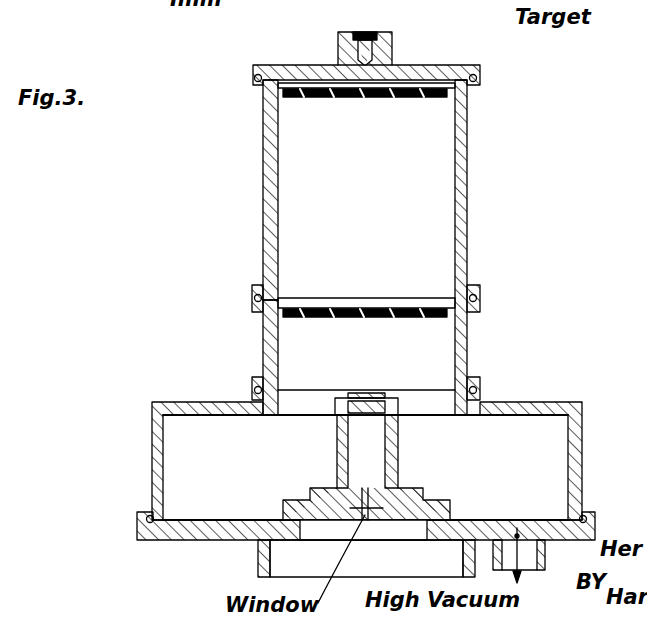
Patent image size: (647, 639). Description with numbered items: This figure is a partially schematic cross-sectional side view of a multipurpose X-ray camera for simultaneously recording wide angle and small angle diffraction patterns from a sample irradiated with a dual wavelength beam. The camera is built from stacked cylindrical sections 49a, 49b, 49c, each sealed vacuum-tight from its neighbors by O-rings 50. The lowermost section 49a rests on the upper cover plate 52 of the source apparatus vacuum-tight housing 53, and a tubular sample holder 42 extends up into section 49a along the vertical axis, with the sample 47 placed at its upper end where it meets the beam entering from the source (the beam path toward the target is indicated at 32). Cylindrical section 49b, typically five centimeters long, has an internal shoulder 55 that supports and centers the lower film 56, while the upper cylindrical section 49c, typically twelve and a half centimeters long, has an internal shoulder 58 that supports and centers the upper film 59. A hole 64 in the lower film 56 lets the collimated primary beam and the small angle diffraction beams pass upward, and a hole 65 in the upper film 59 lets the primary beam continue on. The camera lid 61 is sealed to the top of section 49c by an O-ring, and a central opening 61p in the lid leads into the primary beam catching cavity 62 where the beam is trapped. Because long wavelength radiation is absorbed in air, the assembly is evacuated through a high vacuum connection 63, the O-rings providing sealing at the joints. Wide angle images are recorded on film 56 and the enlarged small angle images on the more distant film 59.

The electron beam / target connection 32 is at (372, 0).
The tubular sample holder 42 is at (400, 455).
The sample 47 is at (380, 395).
The lowermost cylindrical section 49a is at (164, 459).
The cylindrical section 49b is at (270, 339).
The upper cylindrical section 49c is at (270, 204).
The O-ring 50 is at (258, 85).
The upper cover plate 52 is at (195, 525).
The vacuum-tight housing 53 is at (279, 560).
The internal shoulder 55 is at (445, 318).
The lower film 56 is at (415, 312).
The internal shoulder 58 is at (283, 92).
The upper film 59 is at (463, 123).
The camera lid 61 is at (428, 68).
The opening 61p is at (341, 60).
The primary beam catching cavity 62 is at (355, 33).
The high vacuum connection 63 is at (517, 522).
The hole 64 is at (353, 306).
The hole 65 is at (362, 98).